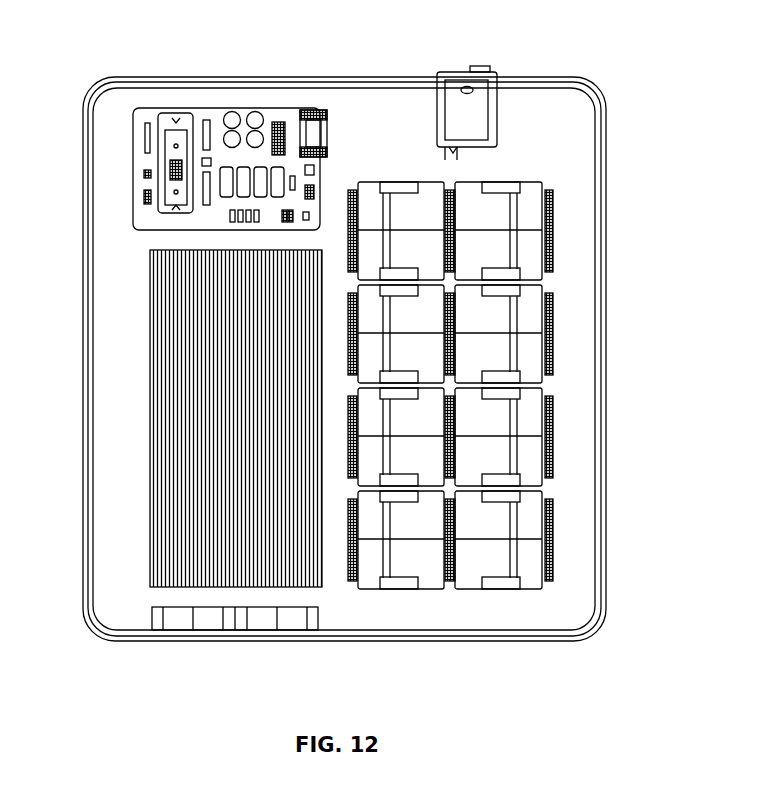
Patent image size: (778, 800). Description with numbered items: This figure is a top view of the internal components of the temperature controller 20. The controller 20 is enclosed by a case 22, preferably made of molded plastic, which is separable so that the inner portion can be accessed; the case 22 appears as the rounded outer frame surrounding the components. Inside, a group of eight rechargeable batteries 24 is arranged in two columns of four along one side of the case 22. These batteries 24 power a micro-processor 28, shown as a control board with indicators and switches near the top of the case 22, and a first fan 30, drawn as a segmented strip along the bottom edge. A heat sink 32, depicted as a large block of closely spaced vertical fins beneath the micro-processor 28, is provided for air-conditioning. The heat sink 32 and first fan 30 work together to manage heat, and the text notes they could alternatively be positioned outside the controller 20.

The controller 20 is at (662, 165).
The case 22 is at (94, 93).
The rechargeable battery 24 is at (533, 254).
The micro-processor 28 is at (213, 120).
The first fan 30 is at (180, 607).
The heat sink 32 is at (150, 417).